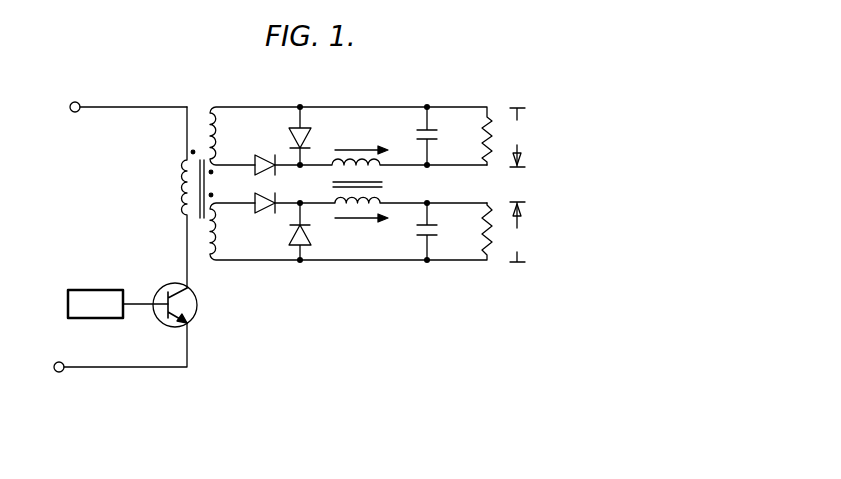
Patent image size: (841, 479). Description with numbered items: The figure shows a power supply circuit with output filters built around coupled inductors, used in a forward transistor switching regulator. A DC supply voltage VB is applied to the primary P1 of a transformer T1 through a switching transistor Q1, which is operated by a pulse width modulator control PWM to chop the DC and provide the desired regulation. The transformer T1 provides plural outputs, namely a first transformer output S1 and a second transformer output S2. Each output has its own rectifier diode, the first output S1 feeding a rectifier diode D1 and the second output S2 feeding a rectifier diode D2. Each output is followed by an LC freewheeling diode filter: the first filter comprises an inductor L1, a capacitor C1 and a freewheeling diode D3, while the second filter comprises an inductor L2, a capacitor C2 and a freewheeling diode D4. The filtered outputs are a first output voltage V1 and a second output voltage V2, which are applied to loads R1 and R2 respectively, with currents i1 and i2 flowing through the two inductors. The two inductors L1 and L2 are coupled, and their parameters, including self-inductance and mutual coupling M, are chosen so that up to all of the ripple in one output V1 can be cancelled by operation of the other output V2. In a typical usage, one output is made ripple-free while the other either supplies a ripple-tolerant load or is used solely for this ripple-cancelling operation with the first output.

The DC supply voltage VB is at (107, 98).
The transformer T1 is at (204, 130).
The primary P1 is at (183, 194).
The transformer output S1 is at (222, 116).
The transformer output S2 is at (218, 245).
The rectifier diode D1 is at (255, 158).
The rectifier diode D2 is at (252, 207).
The freewheeling diode D3 is at (309, 130).
The freewheeling diode D4 is at (307, 238).
The coupled inductor L1 is at (330, 171).
The coupled inductor L2 is at (346, 203).
The mutual coupling M is at (397, 168).
The first output current i1 is at (361, 137).
The second output current i2 is at (361, 230).
The capacitor C1 is at (436, 128).
The capacitor C2 is at (434, 236).
The load R1 is at (482, 150).
The load R2 is at (483, 218).
The output V1 is at (527, 142).
The output V2 is at (527, 226).
The pulse width modulator control PWM is at (118, 304).
The switching transistor Q1 is at (198, 304).